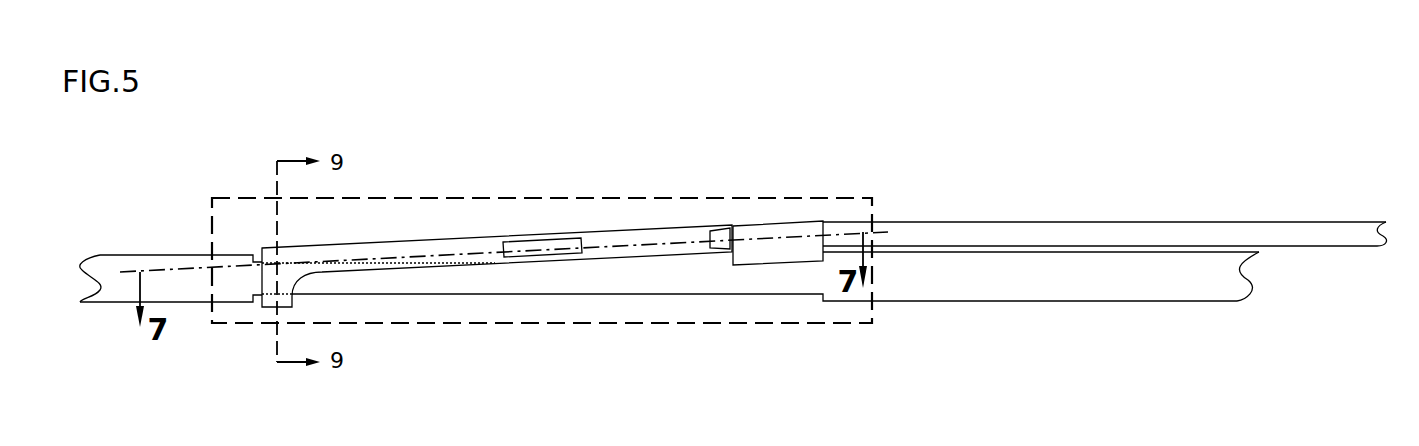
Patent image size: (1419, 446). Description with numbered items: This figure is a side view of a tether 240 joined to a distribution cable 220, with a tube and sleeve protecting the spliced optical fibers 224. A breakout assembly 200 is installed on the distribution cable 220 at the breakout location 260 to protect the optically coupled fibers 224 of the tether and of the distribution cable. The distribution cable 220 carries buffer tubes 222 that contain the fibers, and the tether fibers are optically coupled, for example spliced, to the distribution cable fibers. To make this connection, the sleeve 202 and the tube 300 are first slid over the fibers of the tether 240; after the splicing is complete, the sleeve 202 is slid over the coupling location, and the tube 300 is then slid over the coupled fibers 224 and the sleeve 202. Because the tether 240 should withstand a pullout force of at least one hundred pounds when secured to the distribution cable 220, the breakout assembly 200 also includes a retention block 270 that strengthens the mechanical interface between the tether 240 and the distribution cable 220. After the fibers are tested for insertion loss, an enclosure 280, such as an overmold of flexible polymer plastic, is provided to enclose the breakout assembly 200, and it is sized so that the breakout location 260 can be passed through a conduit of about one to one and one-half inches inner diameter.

The breakout assembly 200 is at (352, 122).
The sleeve 202 is at (545, 238).
The distribution cable 220 is at (112, 300).
The buffer tube 222 is at (547, 282).
The optical fibers 224 is at (414, 253).
The tether 240 is at (1080, 228).
The breakout location 260 is at (541, 128).
The retention block 270 is at (777, 226).
The enclosure 280 is at (707, 325).
The tube 300 is at (478, 238).